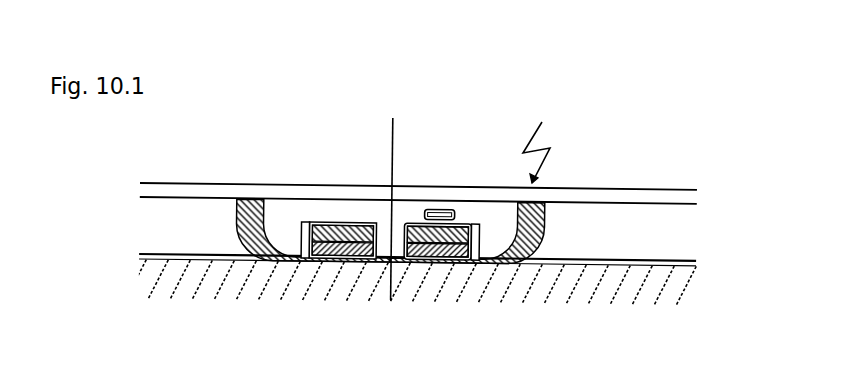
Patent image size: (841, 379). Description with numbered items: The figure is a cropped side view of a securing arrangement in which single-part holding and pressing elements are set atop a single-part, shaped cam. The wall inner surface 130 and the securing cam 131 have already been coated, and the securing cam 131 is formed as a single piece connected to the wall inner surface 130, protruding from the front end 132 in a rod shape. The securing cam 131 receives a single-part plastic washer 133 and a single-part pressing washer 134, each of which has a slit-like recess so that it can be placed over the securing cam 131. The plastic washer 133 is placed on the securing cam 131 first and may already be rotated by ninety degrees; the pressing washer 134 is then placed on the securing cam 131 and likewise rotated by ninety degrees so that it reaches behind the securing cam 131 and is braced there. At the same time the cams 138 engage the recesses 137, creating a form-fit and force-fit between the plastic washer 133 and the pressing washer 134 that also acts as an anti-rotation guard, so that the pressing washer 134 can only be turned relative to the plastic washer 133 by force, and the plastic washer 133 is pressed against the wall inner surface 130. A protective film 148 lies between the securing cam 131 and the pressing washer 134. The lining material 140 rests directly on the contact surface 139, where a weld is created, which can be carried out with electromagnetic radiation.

The wall inner surface 130 is at (601, 262).
The securing cam 131 is at (396, 203).
The front end 132 is at (437, 211).
The plastic washer 133 is at (548, 206).
The pressing washer 134 is at (281, 225).
The recesses 137 is at (305, 232).
The cams 138 is at (478, 235).
The contact surface 139 is at (517, 232).
The lining material 140 is at (683, 200).
The protective film 148 is at (320, 222).